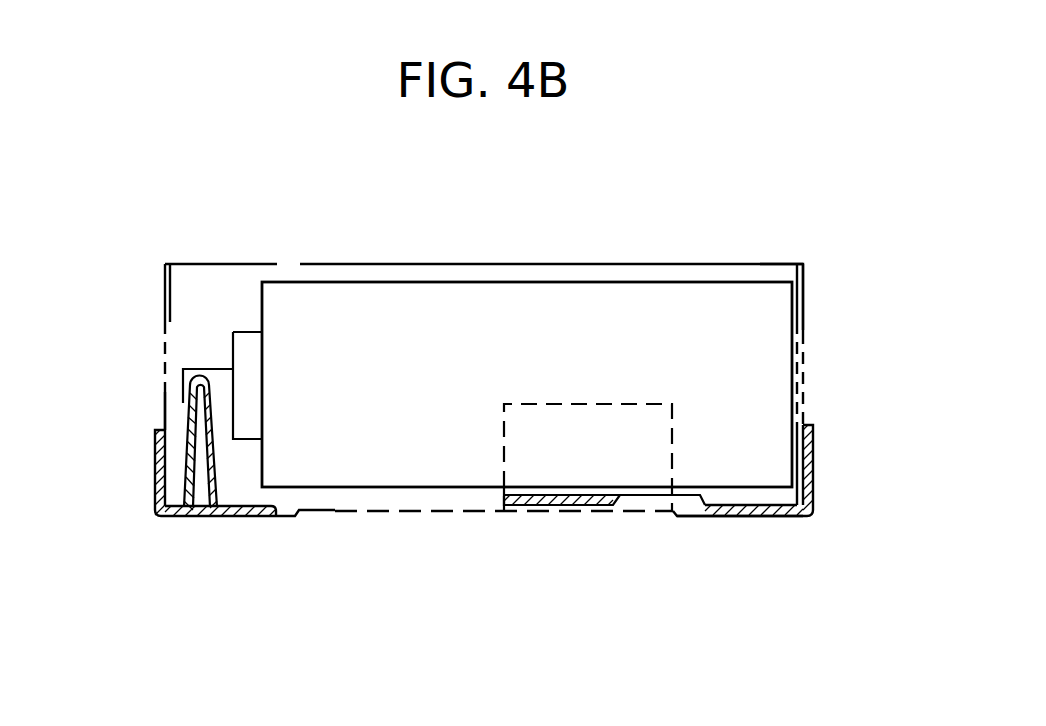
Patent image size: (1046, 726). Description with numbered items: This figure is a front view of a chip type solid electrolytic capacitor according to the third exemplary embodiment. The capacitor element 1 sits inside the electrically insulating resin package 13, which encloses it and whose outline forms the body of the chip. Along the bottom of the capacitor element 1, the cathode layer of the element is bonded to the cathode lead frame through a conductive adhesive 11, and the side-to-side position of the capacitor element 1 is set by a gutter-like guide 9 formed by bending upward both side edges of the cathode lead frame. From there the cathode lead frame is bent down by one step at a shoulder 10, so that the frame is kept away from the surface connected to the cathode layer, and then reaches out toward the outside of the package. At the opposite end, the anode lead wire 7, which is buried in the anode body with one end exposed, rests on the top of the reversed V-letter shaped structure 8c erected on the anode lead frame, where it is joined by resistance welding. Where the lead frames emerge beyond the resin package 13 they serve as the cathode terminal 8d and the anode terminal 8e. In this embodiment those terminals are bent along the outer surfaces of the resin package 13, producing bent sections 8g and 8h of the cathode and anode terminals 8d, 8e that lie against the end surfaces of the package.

The capacitor element 1 is at (297, 383).
The anode lead wire 7 is at (221, 370).
The reversed V-letter shaped structure 8c is at (193, 420).
The cathode terminal 8d is at (765, 512).
The anode terminal 8e is at (250, 510).
The bent section of cathode terminal 8g is at (810, 460).
The bent section of anode terminal 8h is at (158, 477).
The gutter-like guide 9 is at (522, 457).
The shoulder 10 is at (695, 506).
The conductive adhesive 11 is at (562, 493).
The resin package 13 is at (786, 270).